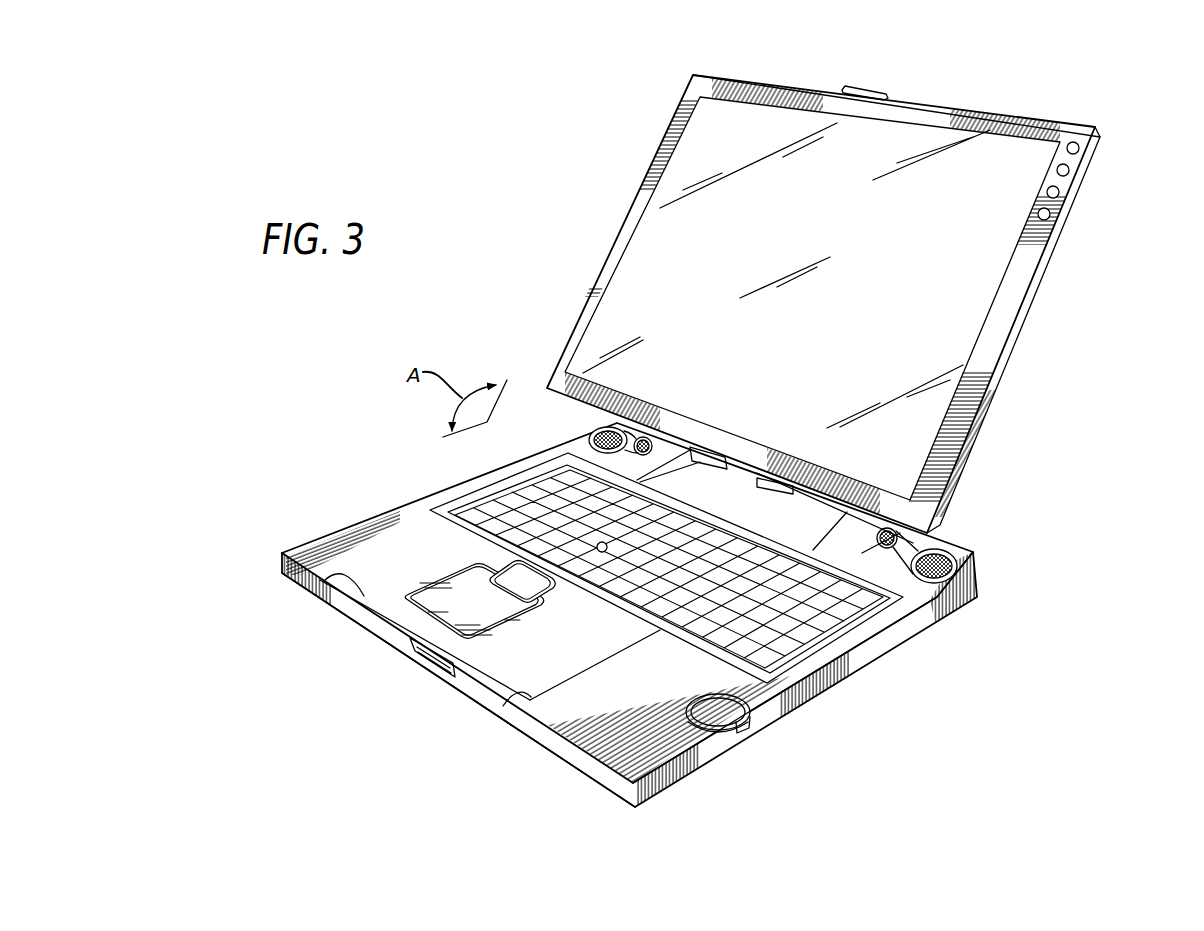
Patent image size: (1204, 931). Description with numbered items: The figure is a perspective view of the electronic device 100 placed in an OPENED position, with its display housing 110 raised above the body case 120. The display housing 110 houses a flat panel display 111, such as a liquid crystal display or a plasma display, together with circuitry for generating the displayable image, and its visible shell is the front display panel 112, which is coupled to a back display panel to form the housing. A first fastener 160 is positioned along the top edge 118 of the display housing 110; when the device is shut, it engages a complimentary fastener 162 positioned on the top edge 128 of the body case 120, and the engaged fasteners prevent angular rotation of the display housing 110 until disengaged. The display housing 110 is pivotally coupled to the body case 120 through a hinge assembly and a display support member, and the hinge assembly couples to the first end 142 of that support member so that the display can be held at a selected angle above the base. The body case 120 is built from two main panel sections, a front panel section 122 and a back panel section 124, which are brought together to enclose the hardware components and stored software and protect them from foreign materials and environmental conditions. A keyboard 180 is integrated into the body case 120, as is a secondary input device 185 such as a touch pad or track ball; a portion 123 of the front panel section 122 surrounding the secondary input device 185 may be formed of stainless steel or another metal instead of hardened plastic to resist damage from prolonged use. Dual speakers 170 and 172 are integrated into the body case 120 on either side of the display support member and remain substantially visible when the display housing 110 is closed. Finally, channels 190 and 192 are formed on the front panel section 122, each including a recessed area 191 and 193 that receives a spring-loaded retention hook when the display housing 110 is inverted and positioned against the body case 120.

The electronic device 100 is at (298, 386).
The display housing 110 is at (606, 236).
The flat panel display 111 is at (710, 155).
The front display panel 112 is at (1010, 296).
The top edge of display housing 118 is at (1046, 116).
The body case 120 is at (282, 573).
The front panel section 122 is at (357, 550).
The portion of front panel section 123 is at (517, 668).
The back panel section 124 is at (717, 768).
The top edge of body case 128 is at (370, 622).
The first end of display support member 142 is at (730, 464).
The first fastener 160 is at (876, 87).
The complimentary fastener 162 is at (432, 652).
The speaker 170 is at (620, 442).
The speaker 172 is at (924, 550).
The keyboard 180 is at (846, 645).
The secondary input device 185 is at (500, 607).
The channel 190 is at (413, 576).
The recessed area 191 is at (318, 582).
The channel 192 is at (565, 684).
The recessed area 193 is at (525, 693).